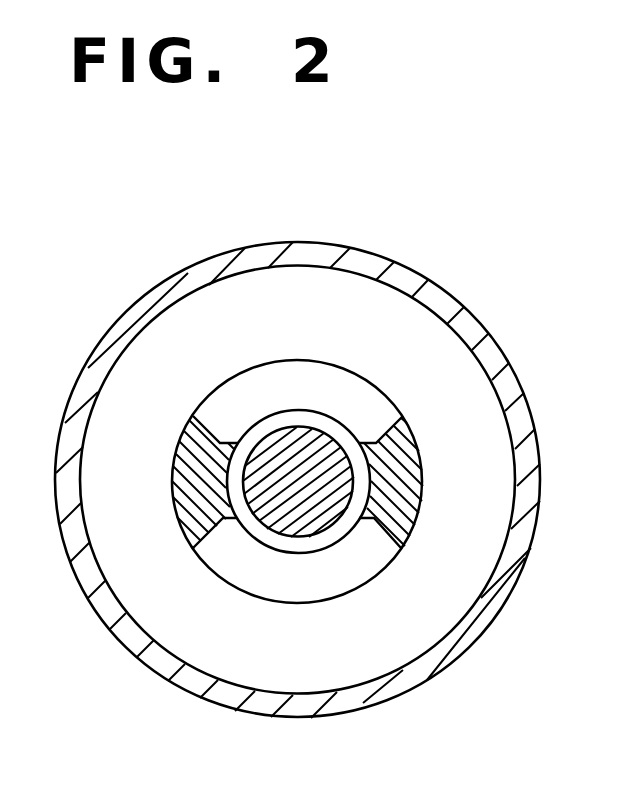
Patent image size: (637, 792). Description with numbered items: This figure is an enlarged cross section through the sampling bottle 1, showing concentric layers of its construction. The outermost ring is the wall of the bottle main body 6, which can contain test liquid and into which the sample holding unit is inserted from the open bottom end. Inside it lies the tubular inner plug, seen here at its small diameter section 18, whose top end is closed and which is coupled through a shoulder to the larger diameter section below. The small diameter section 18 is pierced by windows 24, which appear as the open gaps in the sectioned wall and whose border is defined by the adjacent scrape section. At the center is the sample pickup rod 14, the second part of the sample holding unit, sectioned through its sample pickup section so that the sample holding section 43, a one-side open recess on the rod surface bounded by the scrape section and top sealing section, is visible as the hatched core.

The sampling bottle 1 is at (498, 310).
The bottle main body 6 is at (290, 360).
The sample pickup rod 14 is at (280, 453).
The small diameter section 18 is at (382, 387).
The windows 24 is at (342, 383).
The sample holding section 43 is at (230, 440).